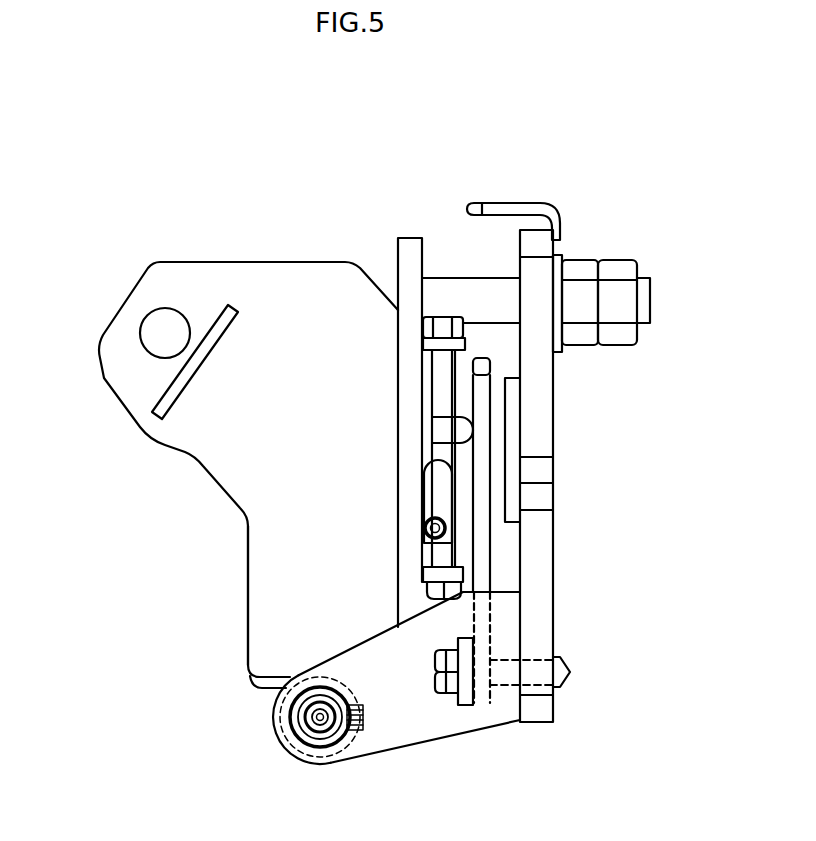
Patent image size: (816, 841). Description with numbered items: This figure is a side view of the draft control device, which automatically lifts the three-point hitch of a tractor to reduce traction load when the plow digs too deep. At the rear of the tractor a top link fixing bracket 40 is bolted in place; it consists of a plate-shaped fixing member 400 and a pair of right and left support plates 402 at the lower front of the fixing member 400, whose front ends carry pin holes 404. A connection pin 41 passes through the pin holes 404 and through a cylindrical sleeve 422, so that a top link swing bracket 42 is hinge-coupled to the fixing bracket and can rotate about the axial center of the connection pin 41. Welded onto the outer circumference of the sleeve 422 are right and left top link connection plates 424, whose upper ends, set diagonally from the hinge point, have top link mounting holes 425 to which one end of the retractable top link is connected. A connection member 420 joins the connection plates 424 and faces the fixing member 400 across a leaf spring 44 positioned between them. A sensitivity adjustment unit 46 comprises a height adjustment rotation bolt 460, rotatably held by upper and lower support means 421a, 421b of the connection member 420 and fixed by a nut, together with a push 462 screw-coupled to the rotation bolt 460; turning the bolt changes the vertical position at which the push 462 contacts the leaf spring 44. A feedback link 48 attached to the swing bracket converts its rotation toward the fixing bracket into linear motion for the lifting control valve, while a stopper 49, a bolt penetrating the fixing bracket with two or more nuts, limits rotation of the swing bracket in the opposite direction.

The top link fixing bracket 40 is at (650, 552).
The fixing member 400 is at (537, 565).
The support plates 402 is at (510, 630).
The pin holes 404 is at (330, 742).
The connection pin 41 is at (363, 738).
The top link swing bracket 42 is at (147, 548).
The connection member 420 is at (410, 533).
The upper support means 421a is at (462, 342).
The lower support means 421b is at (463, 575).
The cylindrical sleeve 422 is at (268, 720).
The top link connection plates 424 is at (273, 548).
The top link mounting holes 425 is at (166, 330).
The leaf spring 44 is at (480, 400).
The sensitivity adjustment unit 46 is at (380, 192).
The height adjustment rotation bolt 460 is at (437, 382).
The push 462 is at (437, 432).
The feedback link 48 is at (437, 503).
The stopper 49 is at (492, 288).